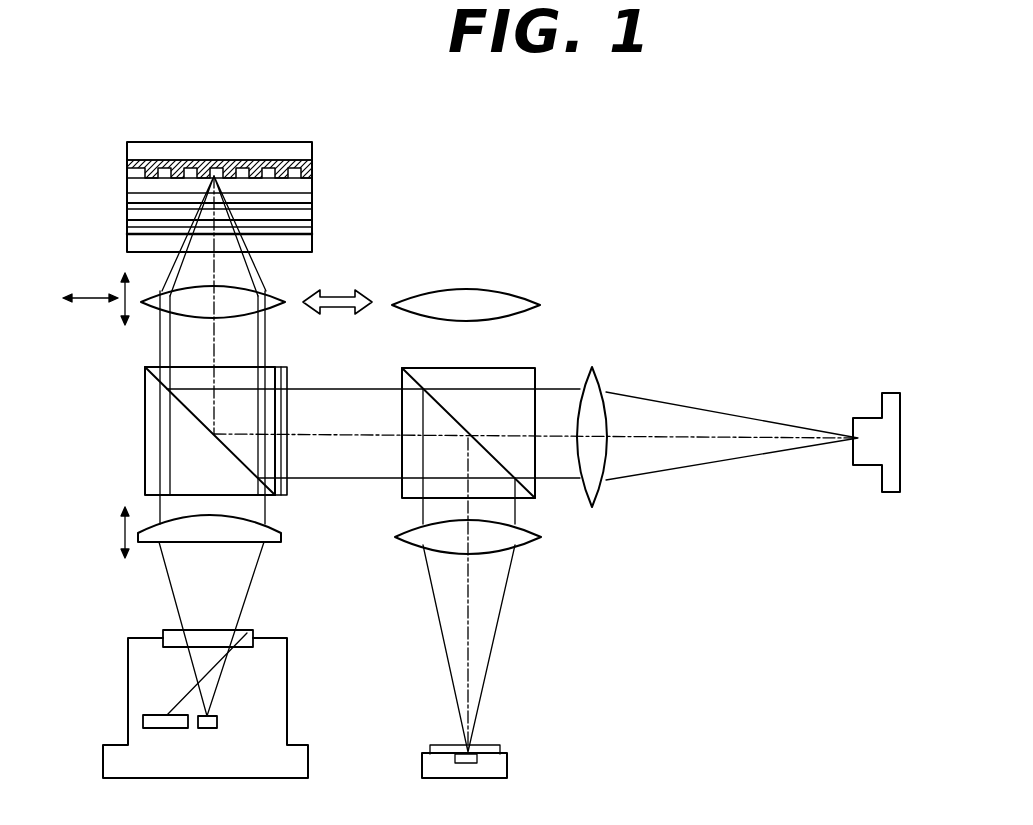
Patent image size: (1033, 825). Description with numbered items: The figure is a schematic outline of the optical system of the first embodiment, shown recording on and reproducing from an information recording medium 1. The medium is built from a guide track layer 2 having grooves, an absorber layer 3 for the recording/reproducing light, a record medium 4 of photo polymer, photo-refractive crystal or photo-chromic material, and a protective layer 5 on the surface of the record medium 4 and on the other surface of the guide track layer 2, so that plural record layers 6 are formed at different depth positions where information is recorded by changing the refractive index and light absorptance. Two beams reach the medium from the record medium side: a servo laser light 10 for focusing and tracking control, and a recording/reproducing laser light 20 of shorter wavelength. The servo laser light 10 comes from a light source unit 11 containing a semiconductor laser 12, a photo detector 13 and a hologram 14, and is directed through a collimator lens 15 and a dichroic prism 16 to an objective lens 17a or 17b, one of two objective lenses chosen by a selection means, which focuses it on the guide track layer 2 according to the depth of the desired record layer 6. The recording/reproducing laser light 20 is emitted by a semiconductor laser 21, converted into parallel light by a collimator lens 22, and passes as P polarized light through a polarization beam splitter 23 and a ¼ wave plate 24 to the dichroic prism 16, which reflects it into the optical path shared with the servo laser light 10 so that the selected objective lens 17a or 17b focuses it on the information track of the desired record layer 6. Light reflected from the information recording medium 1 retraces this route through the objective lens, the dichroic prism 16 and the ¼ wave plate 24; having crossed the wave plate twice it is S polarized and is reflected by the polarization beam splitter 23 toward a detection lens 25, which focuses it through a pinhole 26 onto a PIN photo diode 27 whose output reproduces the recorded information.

The information recording medium 1 is at (261, 188).
The guide track layer 2 is at (197, 162).
The absorber layer 3 is at (153, 182).
The record medium 4 is at (324, 192).
The protective layer 5 is at (265, 150).
The record layers 6 is at (172, 193).
The servo laser light 10 is at (253, 578).
The light source unit 11 is at (137, 668).
The semiconductor laser 12 is at (217, 718).
The photo detector 13 is at (157, 725).
The hologram 14 is at (250, 637).
The collimator lens 15 is at (195, 533).
The dichroic prism 16 is at (152, 433).
The objective lens 17a is at (193, 308).
The objective lens 17b is at (460, 302).
The recording/reproducing laser light 20 is at (703, 410).
The semiconductor laser 21 is at (890, 415).
The collimator lens 22 is at (597, 382).
The polarization beam splitter 23 is at (522, 368).
The ¼ wave plate 24 is at (287, 373).
The detection lens 25 is at (495, 538).
The pinhole 26 is at (475, 738).
The PIN photo diode 27 is at (495, 767).